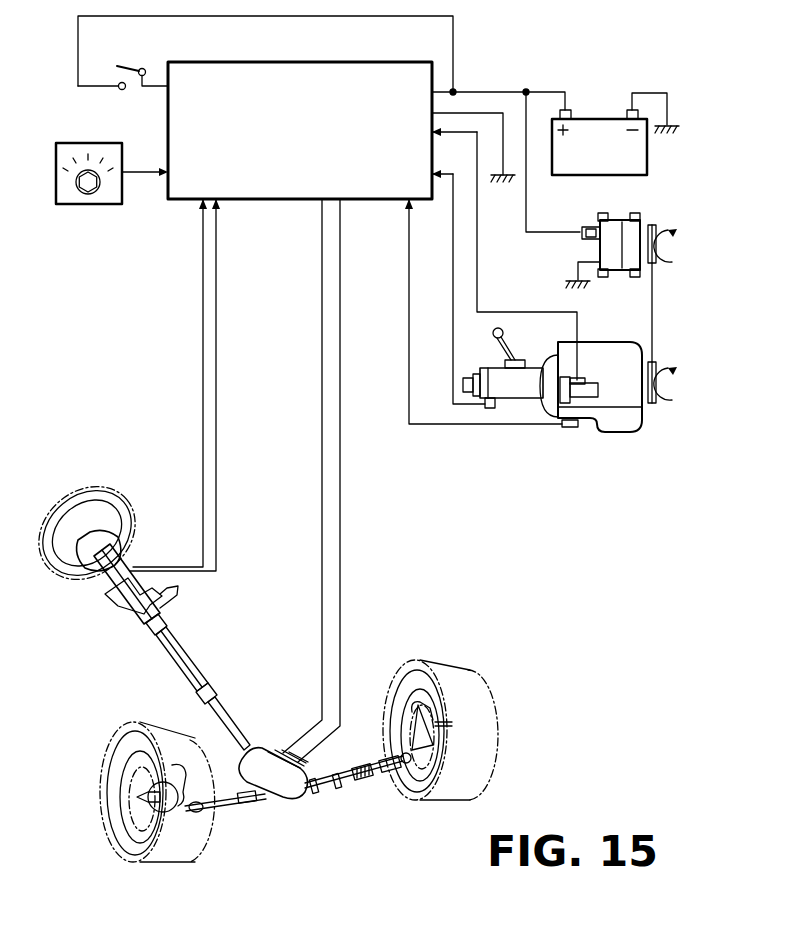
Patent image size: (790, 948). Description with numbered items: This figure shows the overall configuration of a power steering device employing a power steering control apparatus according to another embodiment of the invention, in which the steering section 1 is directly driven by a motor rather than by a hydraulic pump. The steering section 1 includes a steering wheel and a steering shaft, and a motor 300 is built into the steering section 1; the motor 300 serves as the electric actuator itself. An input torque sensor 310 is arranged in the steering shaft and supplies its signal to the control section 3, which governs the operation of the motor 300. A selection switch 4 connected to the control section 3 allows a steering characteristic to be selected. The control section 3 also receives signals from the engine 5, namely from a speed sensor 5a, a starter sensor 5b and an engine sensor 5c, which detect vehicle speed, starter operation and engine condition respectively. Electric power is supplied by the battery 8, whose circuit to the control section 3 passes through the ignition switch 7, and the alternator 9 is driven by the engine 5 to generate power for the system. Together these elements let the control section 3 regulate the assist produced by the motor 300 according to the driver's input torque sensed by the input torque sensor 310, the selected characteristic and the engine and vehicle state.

The steering section 1 is at (259, 664).
The control section 3 is at (185, 201).
The selection switch 4 is at (90, 205).
The engine 5 is at (567, 405).
The speed sensor 5a is at (489, 410).
The starter sensor 5b is at (572, 398).
The engine sensor 5c is at (578, 435).
The ignition switch 7 is at (134, 87).
The battery 8 is at (607, 117).
The alternator 9 is at (624, 220).
The motor 300 is at (272, 765).
The input torque sensor 310 is at (138, 559).